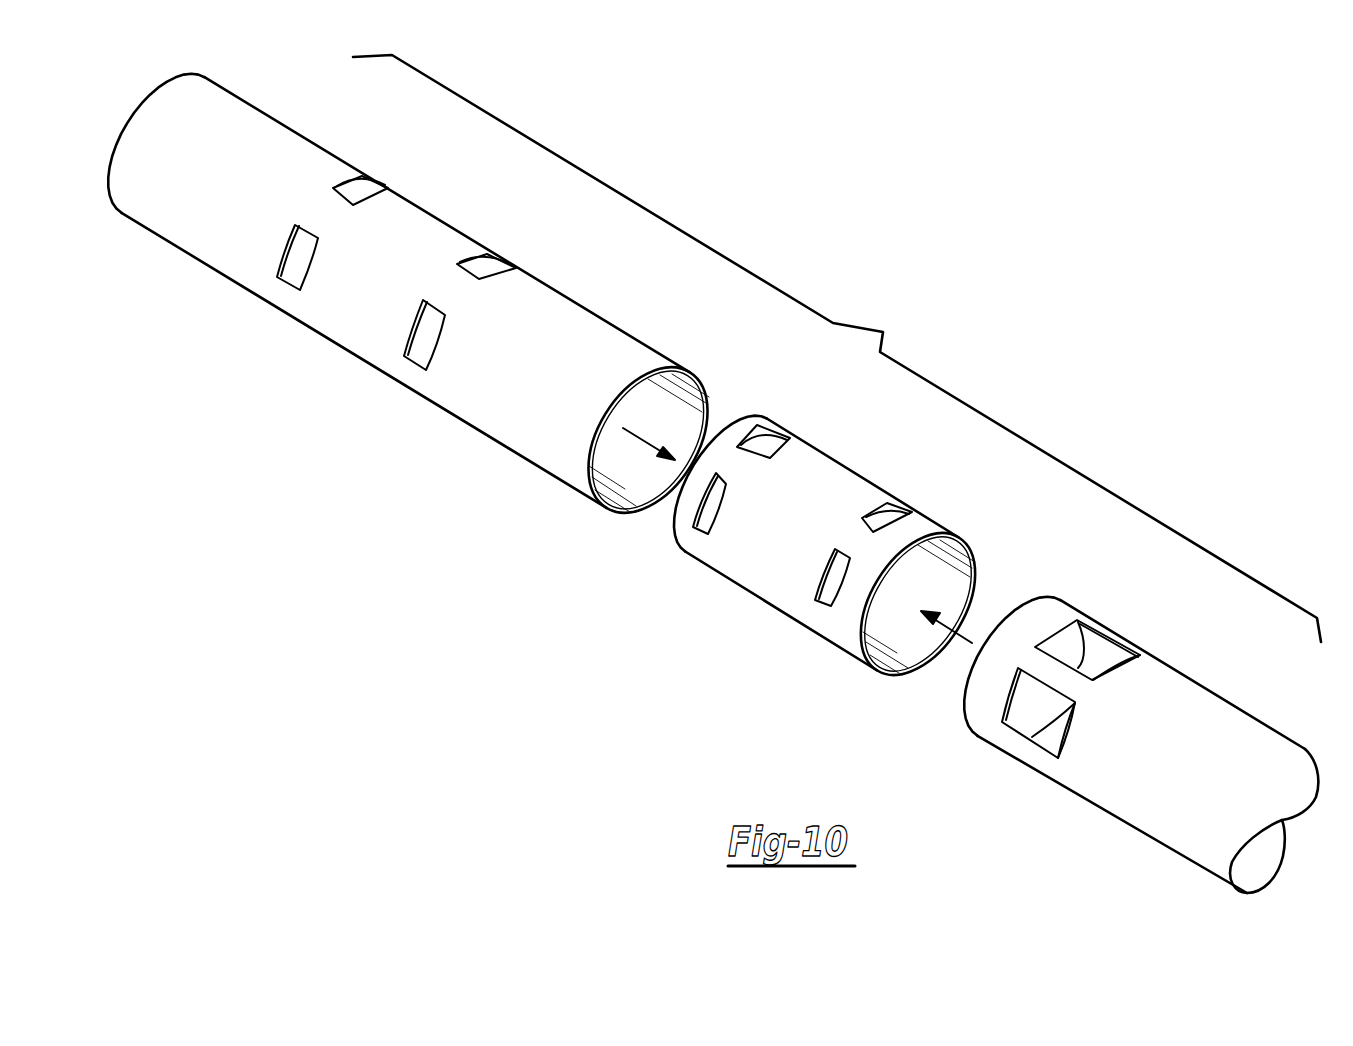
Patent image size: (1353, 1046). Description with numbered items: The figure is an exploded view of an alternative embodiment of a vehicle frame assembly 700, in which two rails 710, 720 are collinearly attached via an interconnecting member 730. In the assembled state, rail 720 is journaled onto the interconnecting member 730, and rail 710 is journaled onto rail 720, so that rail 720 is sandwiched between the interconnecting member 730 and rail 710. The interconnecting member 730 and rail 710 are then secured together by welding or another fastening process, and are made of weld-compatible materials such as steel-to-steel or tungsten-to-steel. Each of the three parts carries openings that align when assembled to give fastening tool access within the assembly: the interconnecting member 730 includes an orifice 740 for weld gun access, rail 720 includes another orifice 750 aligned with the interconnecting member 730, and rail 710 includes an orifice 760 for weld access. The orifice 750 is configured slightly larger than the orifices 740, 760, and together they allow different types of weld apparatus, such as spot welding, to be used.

The vehicle frame assembly 700 is at (837, 348).
The rail 710 is at (420, 218).
The rail 720 is at (1220, 710).
The interconnecting member 730 is at (837, 478).
The orifice 740 is at (770, 434).
The orifice 750 is at (1100, 629).
The orifice 760 is at (333, 188).